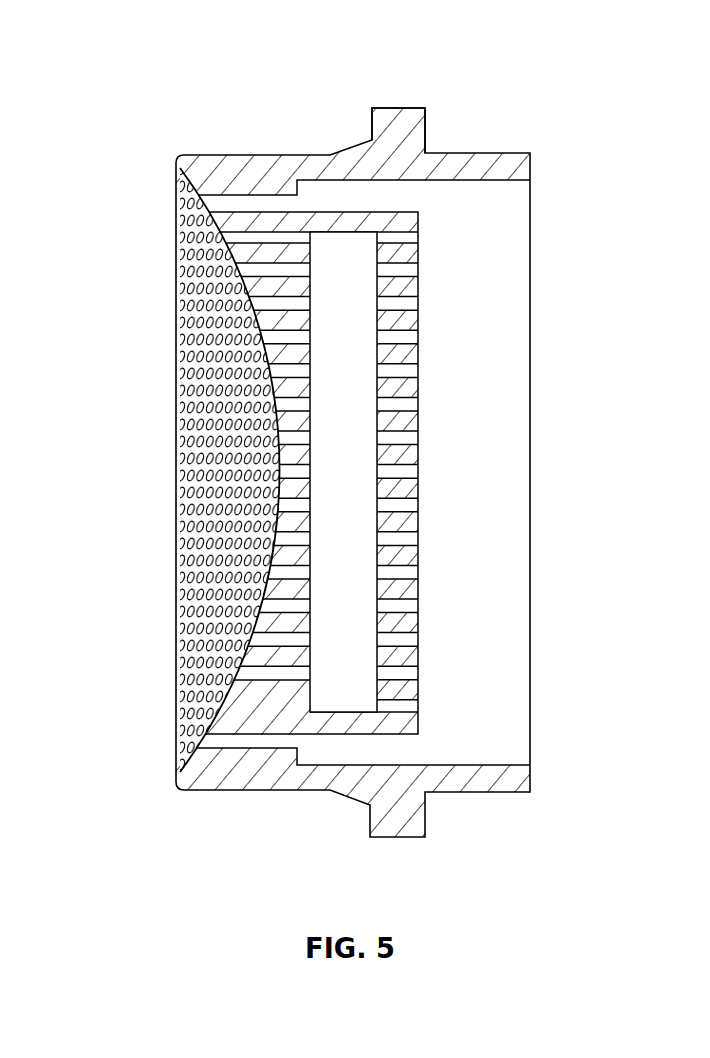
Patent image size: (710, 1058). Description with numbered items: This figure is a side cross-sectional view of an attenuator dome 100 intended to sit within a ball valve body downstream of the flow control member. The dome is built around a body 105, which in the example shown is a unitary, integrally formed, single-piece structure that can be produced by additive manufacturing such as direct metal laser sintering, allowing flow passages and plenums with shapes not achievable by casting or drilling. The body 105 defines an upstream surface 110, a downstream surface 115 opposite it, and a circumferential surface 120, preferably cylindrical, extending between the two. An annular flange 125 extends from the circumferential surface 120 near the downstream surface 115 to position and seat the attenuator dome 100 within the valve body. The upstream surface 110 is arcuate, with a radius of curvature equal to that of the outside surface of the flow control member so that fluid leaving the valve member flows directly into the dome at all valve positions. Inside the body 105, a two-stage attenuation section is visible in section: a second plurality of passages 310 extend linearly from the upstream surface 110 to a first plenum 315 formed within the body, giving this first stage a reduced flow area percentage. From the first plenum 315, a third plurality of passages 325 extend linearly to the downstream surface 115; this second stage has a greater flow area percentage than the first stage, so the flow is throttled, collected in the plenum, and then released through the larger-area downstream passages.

The attenuator dome 100 is at (173, 99).
The body 105 is at (296, 778).
The upstream surface 110 is at (248, 321).
The downstream surface 115 is at (432, 388).
The circumferential surface 120 is at (256, 156).
The annular flange 125 is at (400, 122).
The second plurality of passages 310 is at (297, 506).
The first plenum 315 is at (369, 356).
The third plurality of passages 325 is at (405, 506).